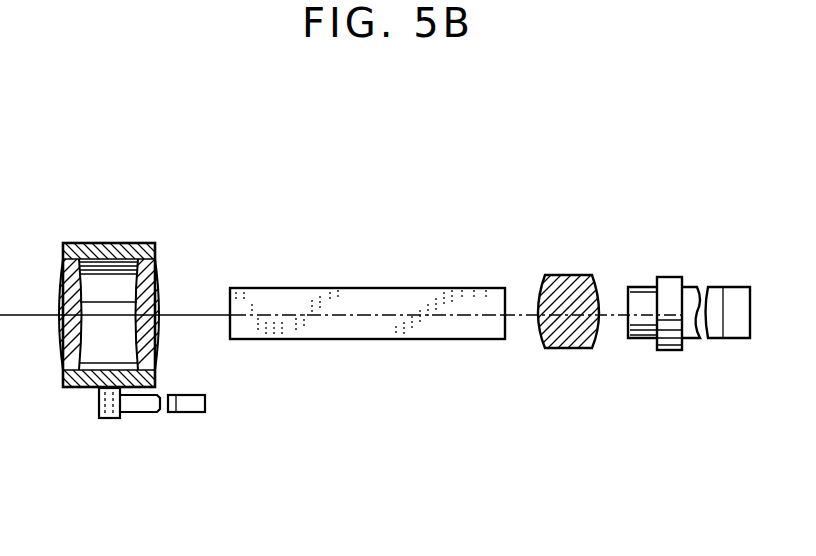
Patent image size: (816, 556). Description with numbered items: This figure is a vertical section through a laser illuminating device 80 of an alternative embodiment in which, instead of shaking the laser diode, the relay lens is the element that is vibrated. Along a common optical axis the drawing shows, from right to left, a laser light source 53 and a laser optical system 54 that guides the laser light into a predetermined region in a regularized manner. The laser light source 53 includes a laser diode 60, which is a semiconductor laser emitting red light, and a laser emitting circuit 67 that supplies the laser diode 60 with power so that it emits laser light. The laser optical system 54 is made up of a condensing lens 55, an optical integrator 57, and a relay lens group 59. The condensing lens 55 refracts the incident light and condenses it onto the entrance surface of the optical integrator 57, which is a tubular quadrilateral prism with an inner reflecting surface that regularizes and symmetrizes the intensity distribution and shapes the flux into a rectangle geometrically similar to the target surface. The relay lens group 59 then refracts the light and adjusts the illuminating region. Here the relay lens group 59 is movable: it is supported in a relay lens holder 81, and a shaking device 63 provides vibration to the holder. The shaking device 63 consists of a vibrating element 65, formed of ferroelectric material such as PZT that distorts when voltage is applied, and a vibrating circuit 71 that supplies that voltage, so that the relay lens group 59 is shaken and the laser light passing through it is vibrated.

The laser light source 53 is at (631, 230).
The laser optical system 54 is at (238, 436).
The condensing lens 55 is at (562, 350).
The optical integrator 57 is at (388, 340).
The relay lens group 59 is at (170, 351).
The laser diode 60 is at (668, 283).
The shaking device 63 is at (81, 458).
The vibrating element 65 is at (109, 419).
The laser emitting circuit 67 is at (733, 287).
The vibrating circuit 71 is at (188, 413).
The laser illuminating device 80 is at (349, 200).
The relay lens holder 81 is at (113, 243).